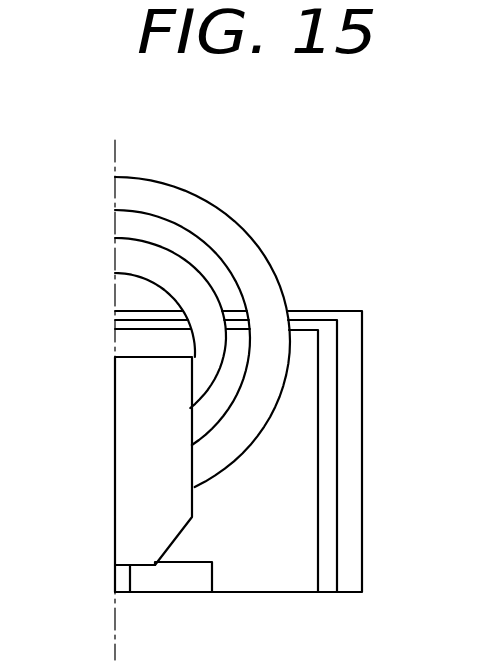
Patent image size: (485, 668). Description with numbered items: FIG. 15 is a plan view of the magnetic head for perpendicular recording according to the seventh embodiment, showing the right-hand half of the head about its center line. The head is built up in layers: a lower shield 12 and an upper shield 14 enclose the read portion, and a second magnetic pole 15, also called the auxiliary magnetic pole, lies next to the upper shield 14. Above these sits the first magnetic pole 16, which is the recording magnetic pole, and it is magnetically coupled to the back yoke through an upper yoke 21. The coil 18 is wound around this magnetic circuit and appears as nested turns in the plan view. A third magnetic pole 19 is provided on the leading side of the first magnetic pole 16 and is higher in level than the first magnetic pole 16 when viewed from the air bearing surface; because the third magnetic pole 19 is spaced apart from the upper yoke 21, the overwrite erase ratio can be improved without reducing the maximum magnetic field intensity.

The lower shield 12 is at (348, 493).
The upper shield 14 is at (323, 533).
The second magnetic pole 15 is at (223, 521).
The first magnetic pole 16 is at (127, 580).
The coil 18 is at (113, 257).
The third magnetic pole 19 is at (168, 582).
The upper yoke 21 is at (127, 458).